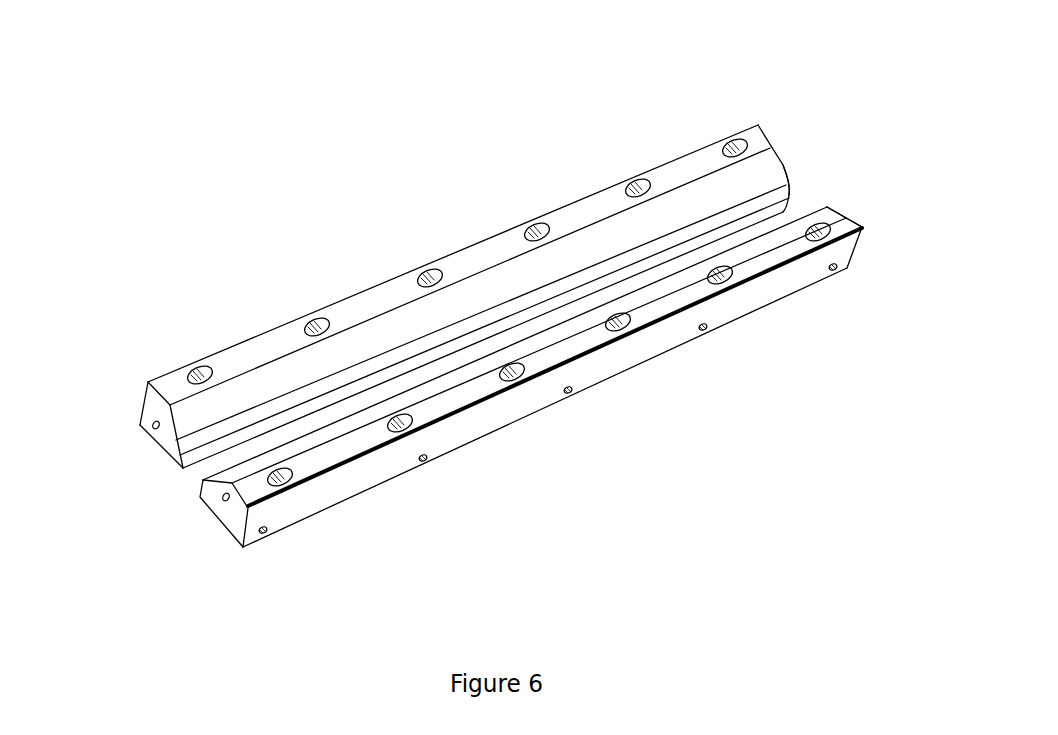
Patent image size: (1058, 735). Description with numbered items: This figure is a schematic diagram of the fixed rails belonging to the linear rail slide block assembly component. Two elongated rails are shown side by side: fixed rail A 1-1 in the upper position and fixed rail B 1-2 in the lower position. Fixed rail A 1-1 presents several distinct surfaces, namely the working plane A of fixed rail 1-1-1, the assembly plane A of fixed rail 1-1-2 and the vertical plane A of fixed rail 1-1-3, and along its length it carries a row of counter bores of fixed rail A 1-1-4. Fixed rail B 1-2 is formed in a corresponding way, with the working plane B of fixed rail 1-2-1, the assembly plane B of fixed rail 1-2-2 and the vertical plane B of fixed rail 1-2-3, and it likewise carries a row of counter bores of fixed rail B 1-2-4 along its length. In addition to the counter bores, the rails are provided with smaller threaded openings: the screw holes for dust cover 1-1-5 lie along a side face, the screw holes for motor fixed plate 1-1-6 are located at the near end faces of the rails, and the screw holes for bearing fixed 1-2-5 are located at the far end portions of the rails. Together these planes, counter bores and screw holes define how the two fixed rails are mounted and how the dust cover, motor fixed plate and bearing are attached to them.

The fixed rail A 1-1 is at (441, 297).
The working plane A of fixed rail 1-1-1 is at (393, 327).
The assembly plane A of fixed rail 1-1-2 is at (148, 433).
The vertical plane A of fixed rail 1-1-3 is at (145, 403).
The counter bores of fixed rail A 1-1-4 is at (537, 230).
The screw holes for dust cover 1-1-5 is at (423, 460).
The screw holes for motor fixed plate 1-1-6 is at (223, 513).
The fixed rail B 1-2 is at (502, 352).
The working plane B of fixed rail 1-2-1 is at (505, 352).
The assembly plane B of fixed rail 1-2-2 is at (232, 538).
The vertical plane B of fixed rail 1-2-3 is at (337, 484).
The counter bores of fixed rail B 1-2-4 is at (622, 320).
The screw holes for bearing fixed 1-2-5 is at (827, 207).